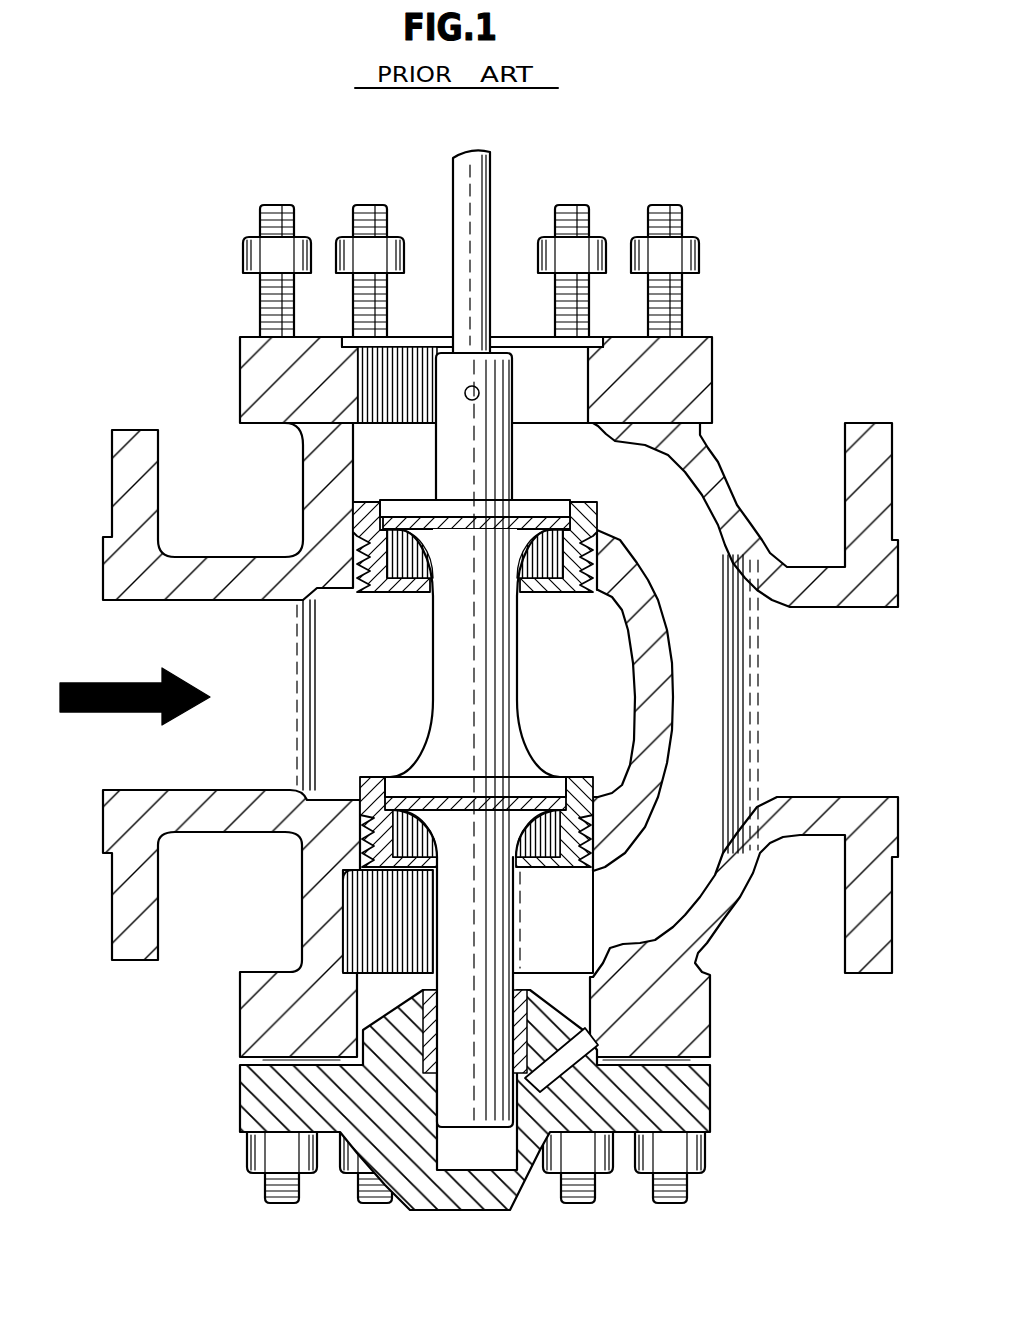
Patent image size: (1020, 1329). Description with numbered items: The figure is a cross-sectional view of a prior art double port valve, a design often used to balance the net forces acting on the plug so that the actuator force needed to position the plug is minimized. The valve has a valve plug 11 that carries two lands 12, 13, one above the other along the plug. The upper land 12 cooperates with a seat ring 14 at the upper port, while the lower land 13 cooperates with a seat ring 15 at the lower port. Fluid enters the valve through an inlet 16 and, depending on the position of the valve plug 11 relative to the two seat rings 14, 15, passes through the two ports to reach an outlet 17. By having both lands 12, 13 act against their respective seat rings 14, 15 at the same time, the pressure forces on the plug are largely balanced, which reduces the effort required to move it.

The valve plug 11 is at (447, 631).
The land 12 is at (560, 478).
The land 13 is at (558, 777).
The seat ring 14 is at (592, 503).
The seat ring 15 is at (369, 777).
The inlet 16 is at (120, 769).
The outlet 17 is at (872, 742).